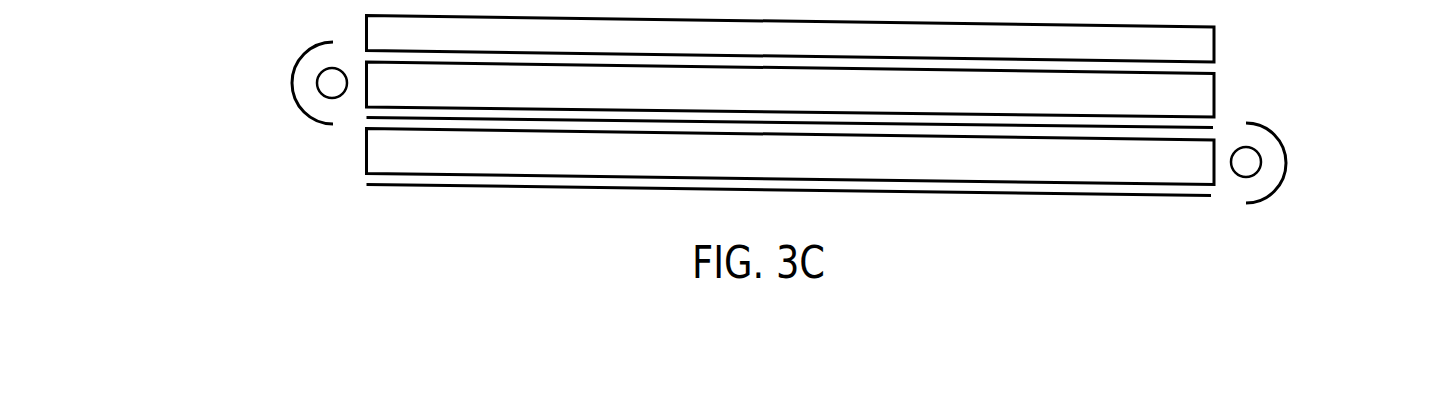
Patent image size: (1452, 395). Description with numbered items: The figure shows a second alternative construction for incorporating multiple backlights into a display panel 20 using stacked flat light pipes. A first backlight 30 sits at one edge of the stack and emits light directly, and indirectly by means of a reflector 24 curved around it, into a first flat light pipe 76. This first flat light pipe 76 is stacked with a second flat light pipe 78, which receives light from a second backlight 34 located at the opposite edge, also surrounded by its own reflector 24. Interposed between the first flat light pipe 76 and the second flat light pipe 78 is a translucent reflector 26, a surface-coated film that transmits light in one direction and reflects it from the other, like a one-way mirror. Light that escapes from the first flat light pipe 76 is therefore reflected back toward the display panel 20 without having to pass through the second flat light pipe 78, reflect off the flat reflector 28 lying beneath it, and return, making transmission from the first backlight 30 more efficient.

The display panel 20 is at (1207, 39).
The reflector 24 is at (288, 89).
The translucent reflector 26 is at (1215, 123).
The flat reflector 28 is at (1120, 198).
The first backlight 30 is at (332, 77).
The second backlight 34 is at (1249, 160).
The first flat light pipe 76 is at (1193, 93).
The second flat light pipe 78 is at (1203, 173).